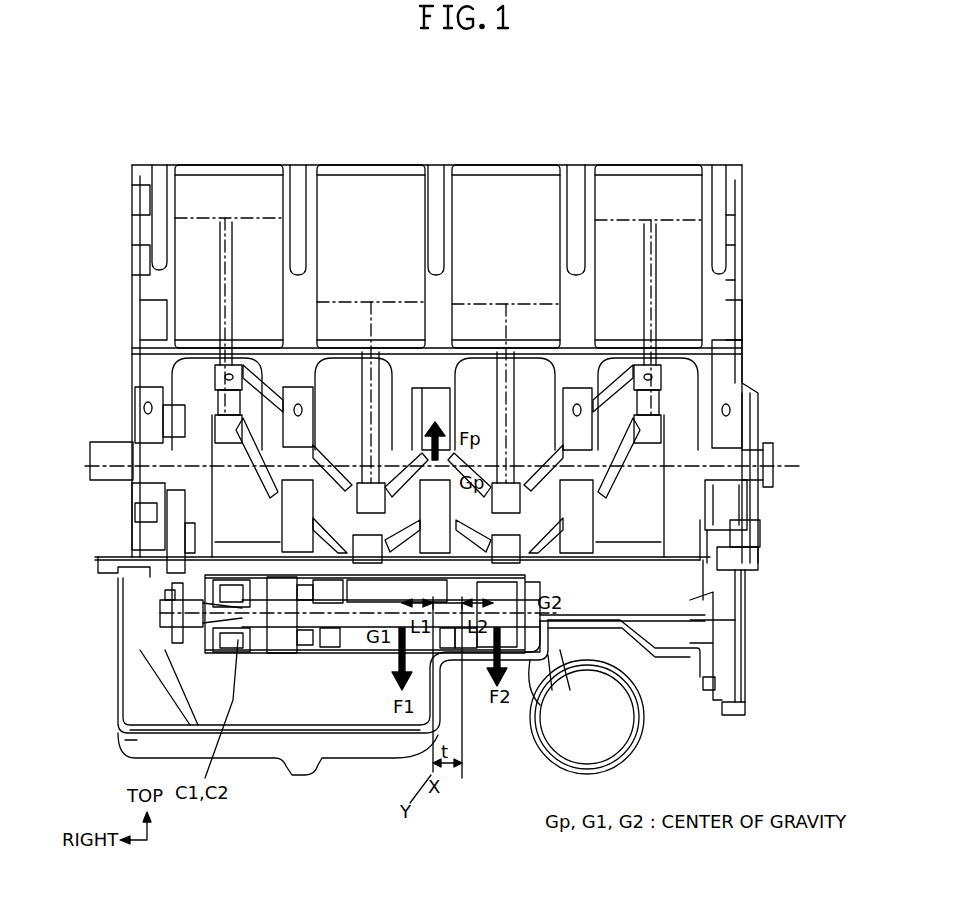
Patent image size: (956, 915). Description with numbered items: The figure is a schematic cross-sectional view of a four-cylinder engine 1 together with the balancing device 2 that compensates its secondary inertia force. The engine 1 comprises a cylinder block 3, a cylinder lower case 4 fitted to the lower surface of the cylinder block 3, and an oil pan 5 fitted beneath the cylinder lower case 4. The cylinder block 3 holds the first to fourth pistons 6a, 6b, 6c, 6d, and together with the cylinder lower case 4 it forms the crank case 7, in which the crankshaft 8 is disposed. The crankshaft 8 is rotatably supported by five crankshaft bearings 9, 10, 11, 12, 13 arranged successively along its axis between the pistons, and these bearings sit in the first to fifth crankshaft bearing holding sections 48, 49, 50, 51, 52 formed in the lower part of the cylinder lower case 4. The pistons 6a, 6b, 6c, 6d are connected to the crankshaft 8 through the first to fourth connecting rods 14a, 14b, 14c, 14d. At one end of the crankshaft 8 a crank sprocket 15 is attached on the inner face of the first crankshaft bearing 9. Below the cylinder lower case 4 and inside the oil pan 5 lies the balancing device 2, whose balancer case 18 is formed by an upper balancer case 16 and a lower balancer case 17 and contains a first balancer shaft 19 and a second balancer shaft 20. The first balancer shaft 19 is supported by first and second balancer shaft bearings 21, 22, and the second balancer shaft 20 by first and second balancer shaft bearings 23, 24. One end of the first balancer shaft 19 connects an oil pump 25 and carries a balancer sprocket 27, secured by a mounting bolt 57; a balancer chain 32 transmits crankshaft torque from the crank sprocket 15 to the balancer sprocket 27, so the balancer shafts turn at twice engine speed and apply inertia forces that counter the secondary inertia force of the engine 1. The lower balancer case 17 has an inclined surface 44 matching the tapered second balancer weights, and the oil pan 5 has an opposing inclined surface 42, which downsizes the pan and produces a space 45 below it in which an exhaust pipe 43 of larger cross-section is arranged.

The engine 1 is at (763, 131).
The balancing device 2 is at (283, 690).
The cylinder block 3 is at (750, 373).
The cylinder lower case 4 is at (760, 542).
The oil pan 5 is at (735, 598).
The first piston 6a is at (230, 185).
The second piston 6b is at (378, 185).
The third piston 6c is at (513, 185).
The fourth piston 6d is at (651, 185).
The crank case 7 is at (749, 391).
The crankshaft 8 is at (730, 462).
The first crankshaft bearing 9 is at (143, 497).
The second crankshaft bearing 10 is at (297, 497).
The third crankshaft bearing 11 is at (428, 492).
The fourth crankshaft bearing 12 is at (575, 495).
The fifth crankshaft bearing 13 is at (732, 498).
The first connecting rod 14a is at (220, 270).
The second connecting rod 14b is at (368, 430).
The third connecting rod 14c is at (510, 430).
The fourth connecting rod 14d is at (655, 297).
The crank sprocket 15 is at (157, 405).
The upper balancer case 16 is at (523, 582).
The lower balancer case 17 is at (557, 650).
The balancer case 18 is at (395, 655).
The first balancer shaft 19 is at (370, 657).
The second balancer shaft 20 is at (370, 657).
The first balancer shaft bearing 21 is at (318, 657).
The second balancer shaft bearing 22 is at (470, 657).
The first balancer shaft bearing 23 is at (318, 657).
The second balancer shaft bearing 24 is at (470, 657).
The oil pump 25 is at (215, 640).
The balancer sprocket 27 is at (195, 615).
The balancer chain 32 is at (150, 569).
The inclined surface 42 is at (543, 737).
The exhaust pipe 43 is at (632, 718).
The inclined surface 44 is at (513, 737).
The space 45 is at (497, 720).
The first crankshaft bearing holding section 48 is at (147, 538).
The second crankshaft bearing holding section 49 is at (293, 537).
The third crankshaft bearing holding section 50 is at (445, 534).
The fourth crankshaft bearing holding section 51 is at (597, 538).
The fifth crankshaft bearing holding section 52 is at (750, 525).
The mounting bolt 57 is at (165, 595).